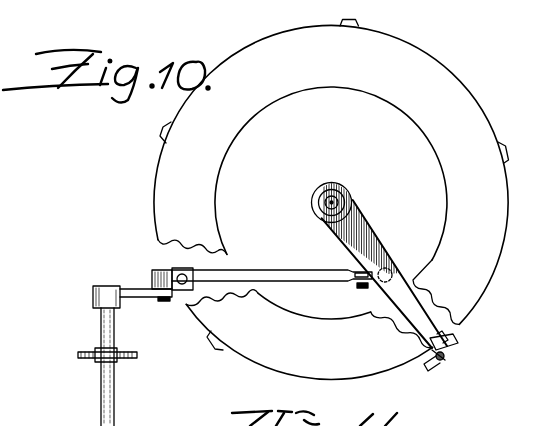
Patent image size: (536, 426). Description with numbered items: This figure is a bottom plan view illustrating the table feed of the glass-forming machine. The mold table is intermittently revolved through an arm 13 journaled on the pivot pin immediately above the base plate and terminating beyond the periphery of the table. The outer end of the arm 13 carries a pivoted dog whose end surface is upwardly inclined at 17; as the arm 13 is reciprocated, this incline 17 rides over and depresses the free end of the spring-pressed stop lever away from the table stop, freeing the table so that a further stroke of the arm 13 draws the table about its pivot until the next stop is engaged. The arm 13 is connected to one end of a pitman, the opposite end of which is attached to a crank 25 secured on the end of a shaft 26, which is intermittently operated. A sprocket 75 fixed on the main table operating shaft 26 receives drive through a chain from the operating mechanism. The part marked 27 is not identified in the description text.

The arm 13 is at (370, 222).
The end fitting 17 is at (440, 364).
The post 25 is at (145, 297).
The bracket 26 is at (102, 317).
The rod 27 is at (291, 257).
The base flange 75 is at (122, 358).